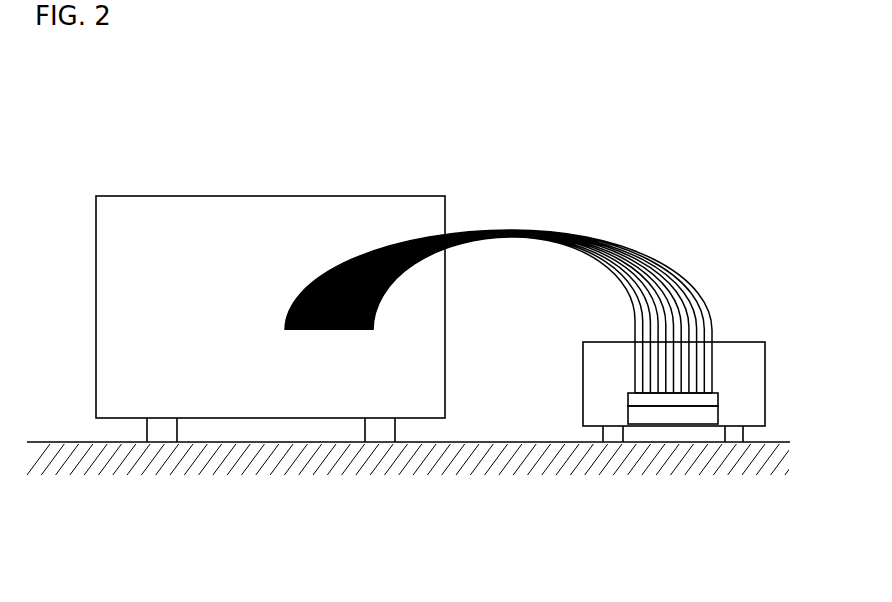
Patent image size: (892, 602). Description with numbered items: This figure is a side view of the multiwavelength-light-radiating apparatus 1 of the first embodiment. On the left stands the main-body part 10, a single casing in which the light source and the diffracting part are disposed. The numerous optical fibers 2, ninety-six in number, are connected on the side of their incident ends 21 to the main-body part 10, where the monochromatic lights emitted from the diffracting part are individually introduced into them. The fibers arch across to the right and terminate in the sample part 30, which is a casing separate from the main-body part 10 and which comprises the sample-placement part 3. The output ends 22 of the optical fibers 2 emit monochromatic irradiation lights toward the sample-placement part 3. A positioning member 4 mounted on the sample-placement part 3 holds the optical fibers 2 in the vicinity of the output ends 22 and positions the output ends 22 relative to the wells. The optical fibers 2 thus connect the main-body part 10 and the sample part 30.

The multiwavelength-light-radiating apparatus 1 is at (594, 141).
The optical fibers 2 is at (390, 248).
The sample-placement part 3 is at (720, 413).
The positioning member 4 is at (720, 401).
The main-body part 10 is at (210, 227).
The incident ends 21 is at (335, 333).
The output ends 22 is at (682, 400).
The sample part 30 is at (742, 363).